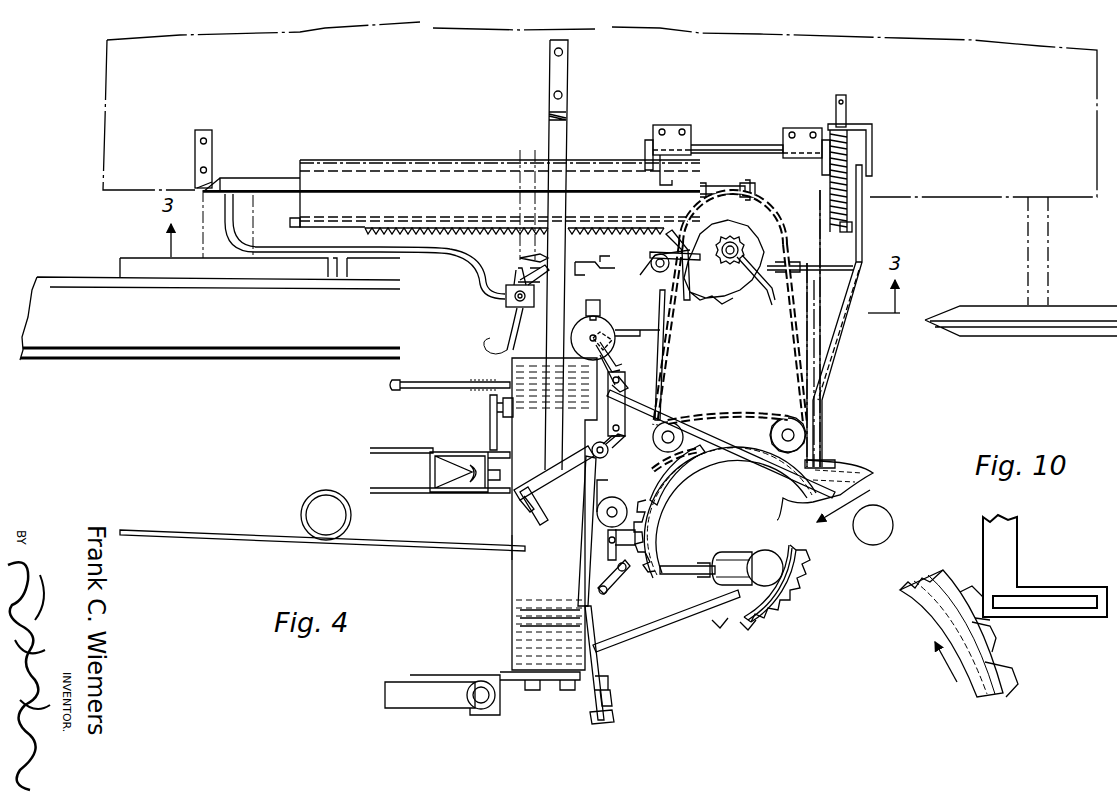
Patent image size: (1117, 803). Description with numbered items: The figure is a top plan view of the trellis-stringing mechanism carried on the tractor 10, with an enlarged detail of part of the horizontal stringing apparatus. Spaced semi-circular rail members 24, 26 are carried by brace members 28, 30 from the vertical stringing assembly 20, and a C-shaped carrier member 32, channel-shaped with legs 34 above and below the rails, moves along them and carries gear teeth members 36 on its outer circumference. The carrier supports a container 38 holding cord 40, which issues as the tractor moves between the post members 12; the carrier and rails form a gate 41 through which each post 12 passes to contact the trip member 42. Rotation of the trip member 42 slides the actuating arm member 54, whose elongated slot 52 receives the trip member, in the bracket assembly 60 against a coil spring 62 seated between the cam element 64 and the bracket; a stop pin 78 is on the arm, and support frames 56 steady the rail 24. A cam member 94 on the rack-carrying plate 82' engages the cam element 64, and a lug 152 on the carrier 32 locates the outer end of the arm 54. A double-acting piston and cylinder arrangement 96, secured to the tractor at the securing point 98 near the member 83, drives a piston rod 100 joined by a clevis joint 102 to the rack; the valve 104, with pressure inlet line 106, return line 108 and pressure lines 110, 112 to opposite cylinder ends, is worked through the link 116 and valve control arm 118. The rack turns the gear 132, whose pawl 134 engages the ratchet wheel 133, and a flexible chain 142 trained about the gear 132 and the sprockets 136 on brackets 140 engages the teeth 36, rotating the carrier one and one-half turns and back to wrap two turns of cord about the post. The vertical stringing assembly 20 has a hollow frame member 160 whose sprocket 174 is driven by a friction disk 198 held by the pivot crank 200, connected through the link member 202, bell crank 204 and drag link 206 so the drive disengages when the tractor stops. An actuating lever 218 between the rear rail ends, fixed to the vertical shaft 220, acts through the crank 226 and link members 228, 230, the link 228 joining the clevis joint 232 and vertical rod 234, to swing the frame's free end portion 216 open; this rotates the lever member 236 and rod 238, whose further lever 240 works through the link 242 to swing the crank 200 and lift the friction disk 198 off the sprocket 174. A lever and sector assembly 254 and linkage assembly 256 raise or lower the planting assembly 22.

In FIG. 4, the table 10 is at (210, 309).
In FIG. 4, the post member 12 is at (328, 522).
In FIG. 4, the vertical stringing assembly 20 is at (510, 630).
In FIG. 4, the planting assembly 22 is at (455, 497).
In FIG. 4, the semi-circular rail member 24 is at (752, 450).
In FIG. 10, the semi-circular rail member 24 is at (930, 615).
In FIG. 4, the semi-circular rail member 26 is at (680, 566).
In FIG. 4, the brace member 28 is at (712, 438).
In FIG. 4, the brace member 30 is at (668, 618).
In FIG. 4, the carrier member 32 is at (660, 512).
In FIG. 10, the carrier member 32 is at (945, 570).
In FIG. 4, the legs 34 is at (812, 556).
In FIG. 4, the gear teeth members 36 is at (746, 622).
In FIG. 10, the gear teeth members 36 is at (1010, 672).
In FIG. 4, the container 38 is at (760, 555).
In FIG. 4, the cord 40 is at (460, 549).
In FIG. 4, the gate 41 is at (851, 501).
In FIG. 4, the trip member 42 is at (780, 505).
In FIG. 10, the elongated slot 52 is at (1057, 590).
In FIG. 4, the actuating arm member 54 is at (835, 303).
In FIG. 10, the actuating arm member 54 is at (1012, 530).
In FIG. 4, the support frames 56 is at (830, 252).
In FIG. 4, the bracket assembly 60 is at (870, 128).
In FIG. 4, the coil spring 62 is at (848, 162).
In FIG. 4, the cam element 64 is at (852, 226).
In FIG. 4, the stop pin 78 is at (848, 122).
In FIG. 4, the bracket 82' is at (648, 155).
In FIG. 4, the bar 83 is at (766, 142).
In FIG. 4, the cam member 94 is at (785, 218).
In FIG. 4, the double-acting piston and cylinder arrangement 96 is at (425, 185).
In FIG. 4, the securing point 98 is at (206, 186).
In FIG. 4, the piston rod 100 is at (735, 185).
In FIG. 4, the clevis joint 102 is at (760, 190).
In FIG. 4, the valve 104 is at (503, 310).
In FIG. 4, the pressure inlet line 106 is at (500, 345).
In FIG. 4, the return line 108 is at (535, 258).
In FIG. 4, the pressure line 110 is at (514, 238).
In FIG. 4, the pressure line 112 is at (612, 264).
In FIG. 4, the link 116 is at (530, 268).
In FIG. 4, the valve control arm 118 is at (520, 280).
In FIG. 4, the gear 132 is at (706, 289).
In FIG. 4, the ratchet wheel 133 is at (740, 283).
In FIG. 4, the pawl 134 is at (730, 246).
In FIG. 4, the sprockets 136 is at (786, 420).
In FIG. 4, the brackets 140 is at (683, 475).
In FIG. 4, the flexible chain 142 is at (800, 340).
In FIG. 10, the lug 152 is at (1000, 622).
In FIG. 4, the hollow frame member 160 is at (545, 668).
In FIG. 4, the sprocket 174 is at (556, 338).
In FIG. 4, the friction disk 198 is at (607, 326).
In FIG. 4, the pivot crank 200 is at (617, 357).
In FIG. 4, the link member 202 is at (650, 350).
In FIG. 4, the bell crank 204 is at (650, 332).
In FIG. 4, the drag link 206 is at (668, 238).
In FIG. 4, the free end portion 216 is at (616, 500).
In FIG. 4, the actuating lever 218 is at (632, 545).
In FIG. 4, the vertical shaft 220 is at (606, 546).
In FIG. 4, the crank 226 is at (603, 592).
In FIG. 4, the link member 228 is at (577, 633).
In FIG. 4, the link member 230 is at (553, 558).
In FIG. 4, the clevis joint 232 is at (614, 715).
In FIG. 4, the vertical rod 234 is at (612, 684).
In FIG. 4, the lever member 236 is at (592, 450).
In FIG. 4, the rod 238 is at (606, 448).
In FIG. 4, the further lever 240 is at (620, 454).
In FIG. 4, the link 242 is at (628, 392).
In FIG. 4, the lever and sector assembly 254 is at (452, 394).
In FIG. 4, the linkage assembly 256 is at (490, 416).